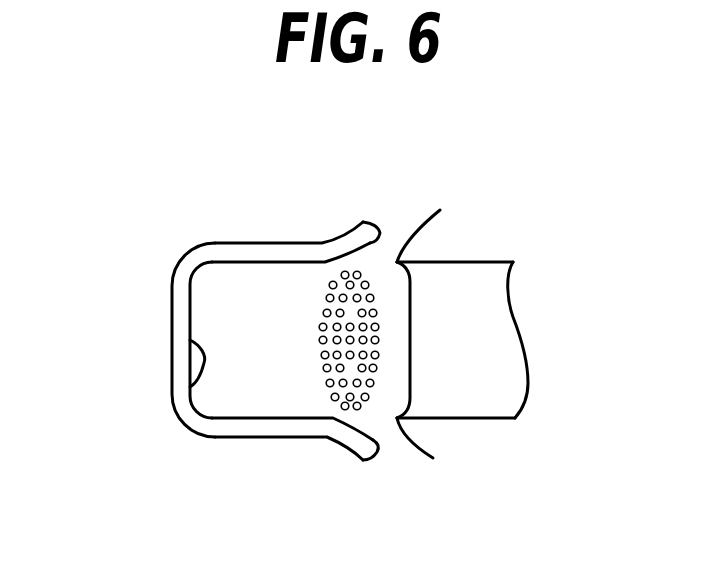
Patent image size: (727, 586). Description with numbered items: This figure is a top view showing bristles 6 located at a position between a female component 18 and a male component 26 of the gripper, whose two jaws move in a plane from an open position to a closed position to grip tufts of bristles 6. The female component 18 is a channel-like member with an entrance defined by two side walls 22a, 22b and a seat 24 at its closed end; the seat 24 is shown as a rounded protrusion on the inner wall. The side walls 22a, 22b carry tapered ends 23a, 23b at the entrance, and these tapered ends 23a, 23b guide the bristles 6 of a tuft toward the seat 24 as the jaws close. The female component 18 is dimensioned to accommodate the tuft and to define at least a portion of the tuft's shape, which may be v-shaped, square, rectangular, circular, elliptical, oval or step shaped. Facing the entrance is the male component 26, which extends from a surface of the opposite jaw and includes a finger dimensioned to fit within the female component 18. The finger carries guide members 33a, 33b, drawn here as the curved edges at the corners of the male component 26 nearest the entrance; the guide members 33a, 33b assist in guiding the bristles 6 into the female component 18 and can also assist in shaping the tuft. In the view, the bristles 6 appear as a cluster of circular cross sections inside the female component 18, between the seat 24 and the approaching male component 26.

The female component 18 is at (172, 327).
The side wall 22a is at (256, 252).
The side wall 22b is at (255, 430).
The tapered end 23a is at (378, 243).
The tapered end 23b is at (380, 443).
The seat 24 is at (203, 368).
The bristles 6 is at (318, 342).
The male component 26 is at (497, 340).
The guide member 33a is at (455, 200).
The guide member 33b is at (433, 458).